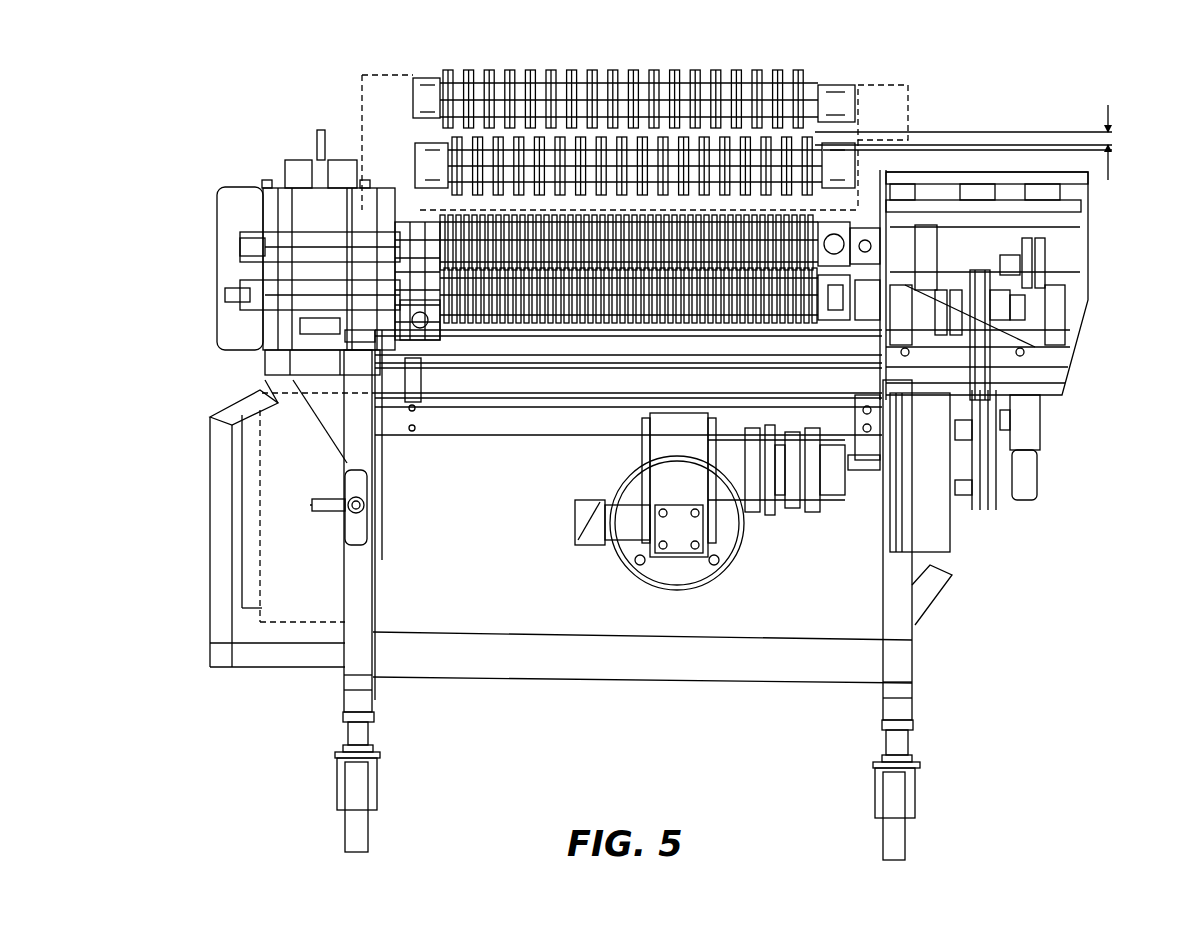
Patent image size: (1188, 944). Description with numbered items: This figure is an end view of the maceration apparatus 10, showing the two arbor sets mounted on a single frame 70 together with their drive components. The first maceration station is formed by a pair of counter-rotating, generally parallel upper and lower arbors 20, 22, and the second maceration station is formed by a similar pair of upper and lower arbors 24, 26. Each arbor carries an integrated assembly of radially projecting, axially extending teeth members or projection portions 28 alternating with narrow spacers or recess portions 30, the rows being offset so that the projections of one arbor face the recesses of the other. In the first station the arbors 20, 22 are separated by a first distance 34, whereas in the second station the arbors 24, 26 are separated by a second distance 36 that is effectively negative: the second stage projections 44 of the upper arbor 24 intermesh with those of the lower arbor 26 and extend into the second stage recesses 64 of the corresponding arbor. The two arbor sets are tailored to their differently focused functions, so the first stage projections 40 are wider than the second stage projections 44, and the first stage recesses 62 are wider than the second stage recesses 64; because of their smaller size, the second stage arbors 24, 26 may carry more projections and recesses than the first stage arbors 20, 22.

The apparatus 10 is at (300, 74).
The upper arbor 20 is at (428, 72).
The lower arbor 22 is at (425, 140).
The upper arbor 24 is at (420, 205).
The lower arbor 26 is at (428, 330).
The projection portions 28 is at (766, 72).
The recess portions 30 is at (706, 78).
The first distance 34 is at (445, 128).
The second distance 36 is at (1035, 347).
The first stage projections 40 is at (540, 72).
The second stage projections 44 is at (730, 333).
The first stage recesses 62 is at (606, 72).
The second stage recesses 64 is at (600, 328).
The frame 70 is at (215, 513).